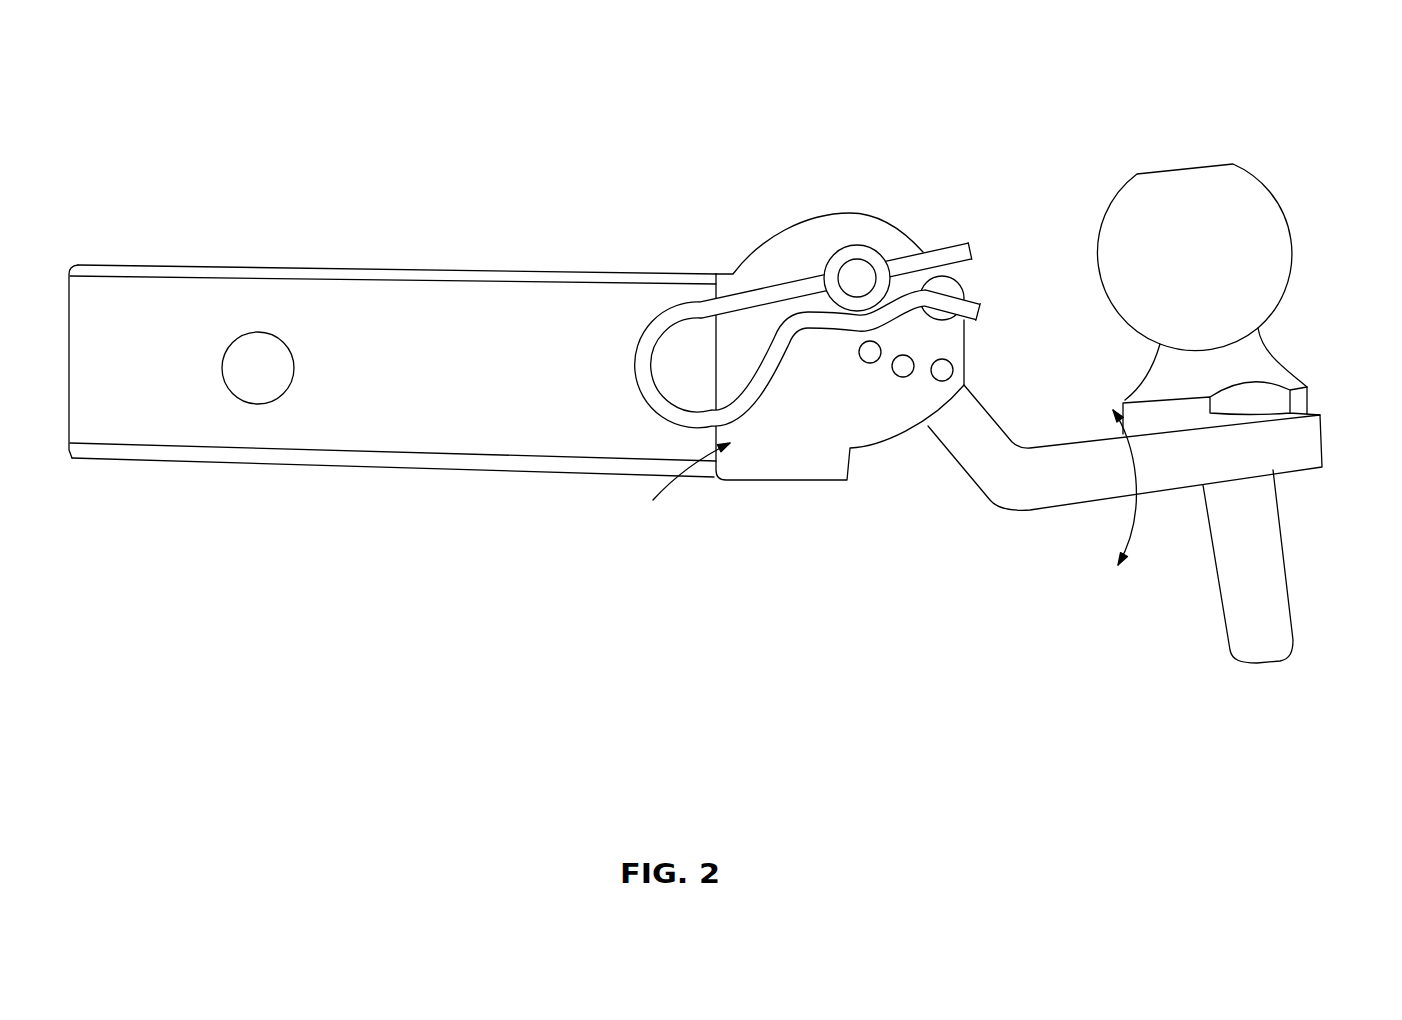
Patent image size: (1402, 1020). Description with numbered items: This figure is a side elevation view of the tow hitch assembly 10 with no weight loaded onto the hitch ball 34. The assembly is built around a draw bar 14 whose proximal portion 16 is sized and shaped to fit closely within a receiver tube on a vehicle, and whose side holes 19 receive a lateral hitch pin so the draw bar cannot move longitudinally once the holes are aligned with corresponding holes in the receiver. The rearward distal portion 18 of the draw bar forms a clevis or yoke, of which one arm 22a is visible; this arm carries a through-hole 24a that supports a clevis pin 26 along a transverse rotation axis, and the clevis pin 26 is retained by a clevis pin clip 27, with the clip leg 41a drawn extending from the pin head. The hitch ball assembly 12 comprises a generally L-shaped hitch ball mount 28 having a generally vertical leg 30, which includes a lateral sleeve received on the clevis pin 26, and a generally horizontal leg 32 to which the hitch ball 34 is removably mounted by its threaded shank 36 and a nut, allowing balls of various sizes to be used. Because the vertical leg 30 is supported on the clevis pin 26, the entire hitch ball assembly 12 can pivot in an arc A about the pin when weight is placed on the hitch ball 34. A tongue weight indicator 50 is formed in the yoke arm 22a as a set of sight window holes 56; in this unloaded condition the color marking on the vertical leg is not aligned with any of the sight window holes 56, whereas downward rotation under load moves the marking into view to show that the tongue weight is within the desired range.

The tow hitch assembly 10 is at (460, 118).
The hitch ball assembly 12 is at (1087, 393).
The draw bar 14 is at (278, 225).
The proximal portion 16 is at (134, 293).
The distal portion 18 is at (735, 275).
The side holes 19 is at (247, 404).
The yoke arm 22a is at (787, 432).
The through-hole 24a is at (843, 247).
The clevis pin 26 is at (858, 275).
The clevis pin clip 27 is at (660, 393).
The hitch ball mount 28 is at (1005, 487).
The vertical leg 30 is at (965, 443).
The horizontal leg 32 is at (1305, 455).
The hitch ball 34 is at (1225, 210).
The threaded shank 36 is at (1268, 563).
The clip leg 41a is at (930, 313).
The tongue weight indicator 50 is at (675, 520).
The sight window holes 56 is at (940, 373).
The arc A is at (1121, 508).